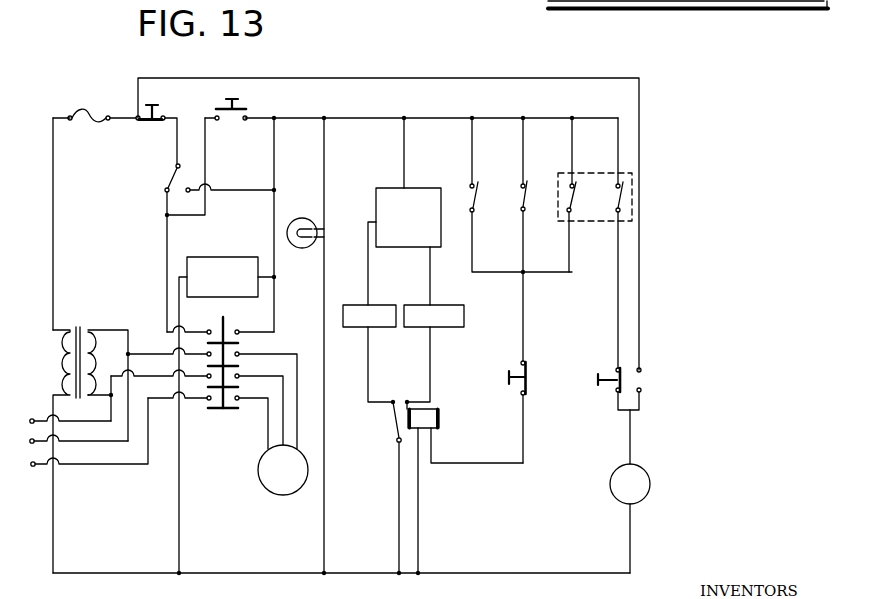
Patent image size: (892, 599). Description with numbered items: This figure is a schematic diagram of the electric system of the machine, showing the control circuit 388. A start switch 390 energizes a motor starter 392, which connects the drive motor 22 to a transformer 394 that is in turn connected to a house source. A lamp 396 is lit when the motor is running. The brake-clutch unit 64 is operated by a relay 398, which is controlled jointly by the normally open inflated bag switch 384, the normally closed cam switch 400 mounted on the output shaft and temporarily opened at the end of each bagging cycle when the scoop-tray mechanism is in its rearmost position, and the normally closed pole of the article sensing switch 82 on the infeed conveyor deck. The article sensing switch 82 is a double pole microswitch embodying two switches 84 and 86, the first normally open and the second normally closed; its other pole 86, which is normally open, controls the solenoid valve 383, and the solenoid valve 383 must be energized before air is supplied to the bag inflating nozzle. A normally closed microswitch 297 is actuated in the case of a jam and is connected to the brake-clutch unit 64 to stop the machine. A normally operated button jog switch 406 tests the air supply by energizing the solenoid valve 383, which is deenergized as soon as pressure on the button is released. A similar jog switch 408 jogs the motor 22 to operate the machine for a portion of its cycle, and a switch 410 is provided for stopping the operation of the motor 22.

The control circuit 388 is at (406, 73).
The switch 410 is at (153, 107).
The start switch 390 is at (239, 101).
The jog switch 408 is at (177, 172).
The motor starter 392 is at (165, 259).
The transformer 394 is at (81, 328).
The drive motor 22 is at (258, 469).
The lamp 396 is at (302, 218).
The brake-clutch unit 64 is at (391, 188).
The relay 398 is at (437, 411).
The inflated bag switch 384 is at (468, 188).
The cam switch 400 is at (520, 187).
The switch 84 is at (571, 184).
The pole 86 is at (617, 184).
The microswitch 82 is at (611, 222).
The microswitch 297 is at (509, 377).
The jog switch 406 is at (613, 368).
The solenoid valve 383 is at (613, 470).